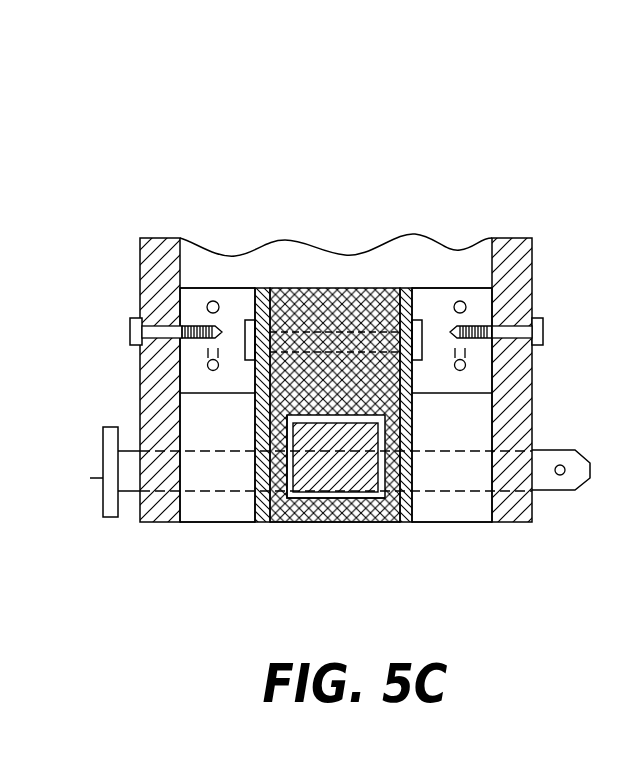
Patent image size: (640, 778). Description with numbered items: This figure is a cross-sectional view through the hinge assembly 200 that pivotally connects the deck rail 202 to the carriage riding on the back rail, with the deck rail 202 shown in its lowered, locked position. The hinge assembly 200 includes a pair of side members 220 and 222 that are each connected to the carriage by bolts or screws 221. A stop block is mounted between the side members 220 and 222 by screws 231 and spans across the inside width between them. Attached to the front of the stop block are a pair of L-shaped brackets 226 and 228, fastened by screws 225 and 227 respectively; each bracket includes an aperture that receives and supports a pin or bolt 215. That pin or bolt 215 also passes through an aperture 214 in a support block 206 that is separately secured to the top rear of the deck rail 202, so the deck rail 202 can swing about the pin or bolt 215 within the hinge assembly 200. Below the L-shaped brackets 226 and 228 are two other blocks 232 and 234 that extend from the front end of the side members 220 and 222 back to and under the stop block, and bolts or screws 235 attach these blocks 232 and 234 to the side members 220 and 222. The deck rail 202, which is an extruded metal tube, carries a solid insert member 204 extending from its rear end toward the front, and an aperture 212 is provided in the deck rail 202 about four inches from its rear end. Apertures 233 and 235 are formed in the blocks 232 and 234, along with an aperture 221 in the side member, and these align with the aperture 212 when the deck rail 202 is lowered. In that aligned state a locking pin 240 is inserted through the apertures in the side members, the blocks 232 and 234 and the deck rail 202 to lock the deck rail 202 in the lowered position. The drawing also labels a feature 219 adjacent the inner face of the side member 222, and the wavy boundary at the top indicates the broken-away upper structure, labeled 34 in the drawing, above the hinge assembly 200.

The hinge assembly 200 is at (556, 136).
The housing wall 34 is at (354, 252).
The deck rail 202 is at (365, 522).
The solid insert member 204 is at (355, 478).
The support block 206 is at (312, 288).
The aperture 212 is at (288, 478).
The aperture 214 is at (358, 332).
The pin or bolt 215 is at (273, 254).
The spacer strip 219 is at (245, 347).
The side member 220 is at (532, 420).
The bolts or screws 221 is at (523, 487).
The side member 222 is at (140, 383).
The screws 225 is at (466, 307).
The L-shaped bracket 226 is at (458, 251).
The screws 227 is at (207, 307).
The L-shaped bracket 228 is at (237, 288).
The screws 231 is at (130, 333).
The block 232 is at (468, 522).
The aperture 233 is at (428, 488).
The block 234 is at (212, 522).
The bolts or screws 235 is at (193, 486).
The locking pin 240 is at (90, 478).